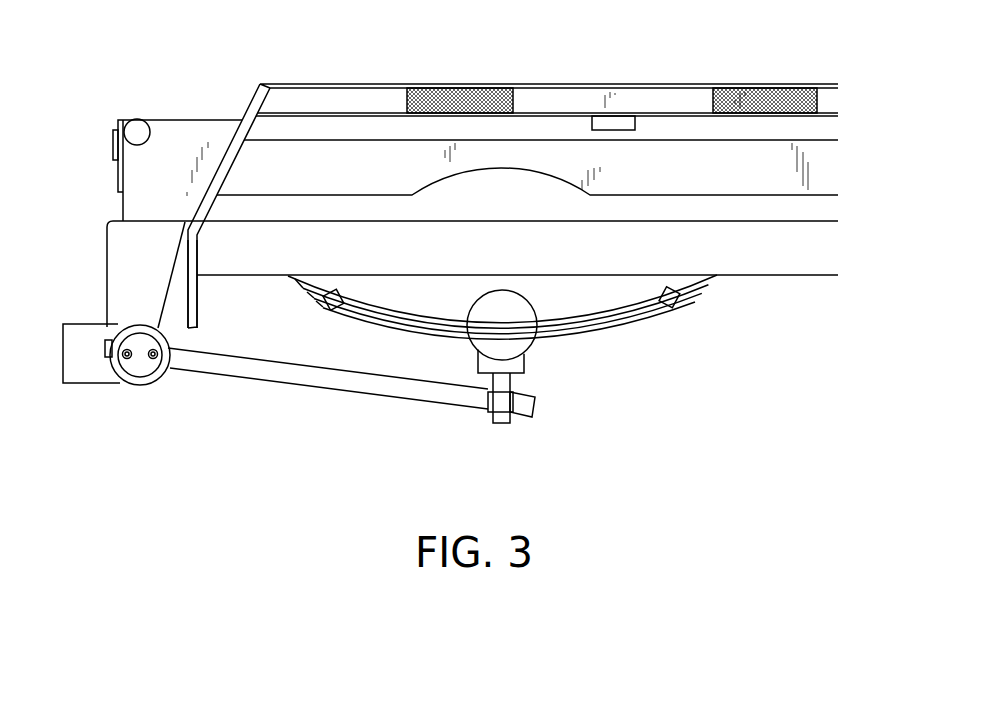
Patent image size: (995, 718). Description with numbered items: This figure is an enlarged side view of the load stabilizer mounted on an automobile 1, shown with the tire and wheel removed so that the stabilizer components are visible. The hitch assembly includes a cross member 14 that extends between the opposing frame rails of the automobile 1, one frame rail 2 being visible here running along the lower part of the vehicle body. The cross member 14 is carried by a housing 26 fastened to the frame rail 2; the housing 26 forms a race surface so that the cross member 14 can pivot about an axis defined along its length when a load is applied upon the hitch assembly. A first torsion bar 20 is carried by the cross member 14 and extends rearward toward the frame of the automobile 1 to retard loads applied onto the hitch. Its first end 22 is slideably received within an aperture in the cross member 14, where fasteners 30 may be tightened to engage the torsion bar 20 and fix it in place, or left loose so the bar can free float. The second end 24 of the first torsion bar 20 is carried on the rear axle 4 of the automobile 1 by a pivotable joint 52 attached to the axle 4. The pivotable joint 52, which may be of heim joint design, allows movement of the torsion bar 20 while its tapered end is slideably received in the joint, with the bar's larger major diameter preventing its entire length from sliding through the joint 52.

The automobile 1 is at (573, 100).
The frame rail 2 is at (582, 248).
The rear axle 4 is at (515, 332).
The cross member 14 is at (128, 358).
The first torsion bar 20 is at (347, 380).
The first end 22 is at (187, 353).
The second end 24 is at (435, 390).
The housing 26 is at (110, 335).
The fasteners 30 is at (152, 358).
The pivotable joint 52 is at (518, 363).